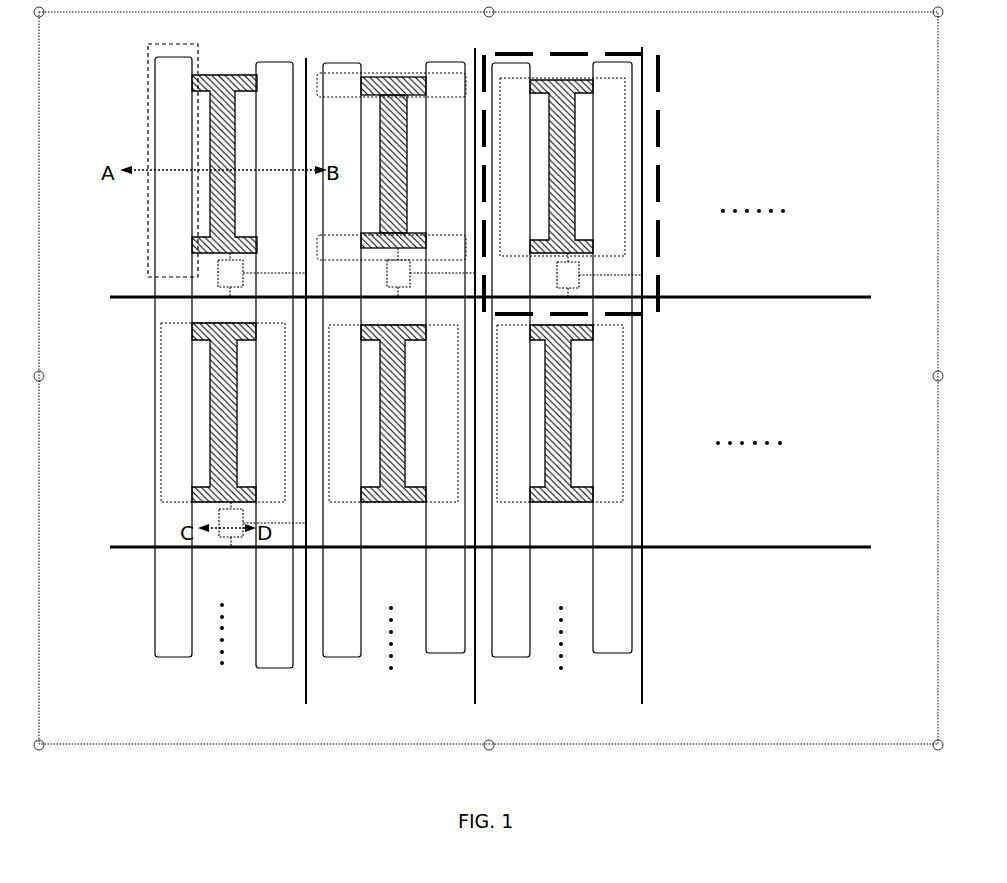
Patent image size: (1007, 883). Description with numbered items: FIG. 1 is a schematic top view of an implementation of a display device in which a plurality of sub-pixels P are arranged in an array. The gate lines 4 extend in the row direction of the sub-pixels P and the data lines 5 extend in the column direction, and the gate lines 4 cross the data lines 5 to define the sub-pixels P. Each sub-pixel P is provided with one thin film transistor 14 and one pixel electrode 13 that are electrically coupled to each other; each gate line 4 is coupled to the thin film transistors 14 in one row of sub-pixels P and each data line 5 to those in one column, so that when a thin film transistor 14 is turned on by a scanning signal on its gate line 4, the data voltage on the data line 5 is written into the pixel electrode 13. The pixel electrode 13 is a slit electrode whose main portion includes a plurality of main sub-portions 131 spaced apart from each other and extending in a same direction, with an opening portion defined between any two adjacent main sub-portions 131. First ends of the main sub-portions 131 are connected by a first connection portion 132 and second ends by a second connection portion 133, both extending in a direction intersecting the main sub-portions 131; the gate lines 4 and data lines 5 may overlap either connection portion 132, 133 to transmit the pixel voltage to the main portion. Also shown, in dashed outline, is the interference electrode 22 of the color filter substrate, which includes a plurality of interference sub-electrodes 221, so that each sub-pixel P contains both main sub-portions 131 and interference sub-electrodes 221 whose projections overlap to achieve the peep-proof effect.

The gate line 4 is at (479, 420).
The data line 5 is at (471, 367).
The interference electrode 22 is at (147, 44).
The interference sub-electrode 221 is at (173, 160).
The pixel electrode 13 is at (243, 110).
The main sub-portion 131 is at (408, 105).
The first connection portion 132 is at (373, 74).
The second connection portion 133 is at (375, 260).
The thin film transistor 14 is at (430, 397).
The sub-pixel P is at (660, 127).